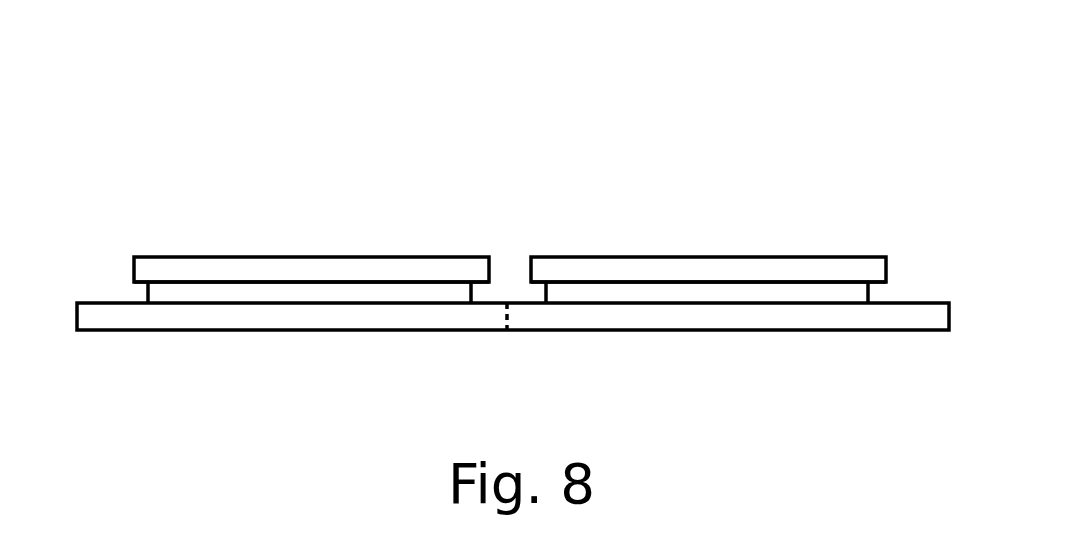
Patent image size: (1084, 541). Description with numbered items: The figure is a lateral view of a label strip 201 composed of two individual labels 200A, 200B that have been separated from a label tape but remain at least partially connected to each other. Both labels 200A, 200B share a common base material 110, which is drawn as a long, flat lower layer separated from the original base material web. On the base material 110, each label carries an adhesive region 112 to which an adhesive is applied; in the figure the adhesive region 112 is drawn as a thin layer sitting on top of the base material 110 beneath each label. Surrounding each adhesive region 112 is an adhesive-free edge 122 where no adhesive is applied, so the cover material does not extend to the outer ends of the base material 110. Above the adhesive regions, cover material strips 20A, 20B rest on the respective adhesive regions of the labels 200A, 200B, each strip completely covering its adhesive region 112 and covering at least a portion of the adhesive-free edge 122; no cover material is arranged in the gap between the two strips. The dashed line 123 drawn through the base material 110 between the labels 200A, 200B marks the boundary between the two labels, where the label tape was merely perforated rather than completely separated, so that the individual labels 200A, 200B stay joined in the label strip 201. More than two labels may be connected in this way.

The base material 110 is at (908, 303).
The adhesive region 112 is at (147, 297).
The adhesive-free edge 122 is at (123, 218).
The boundary line 123 is at (507, 303).
The label strip 201 is at (244, 123).
The label 200A is at (338, 159).
The label 200B is at (664, 159).
The cover material strip 20A is at (408, 257).
The cover material strip 20B is at (748, 257).